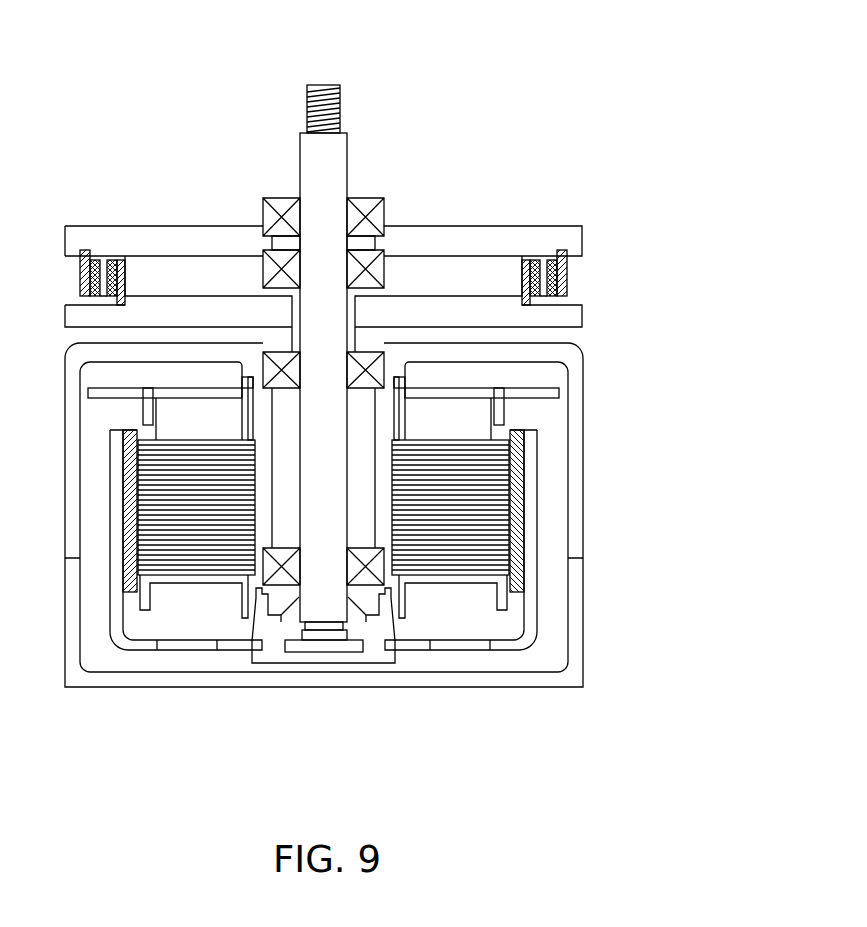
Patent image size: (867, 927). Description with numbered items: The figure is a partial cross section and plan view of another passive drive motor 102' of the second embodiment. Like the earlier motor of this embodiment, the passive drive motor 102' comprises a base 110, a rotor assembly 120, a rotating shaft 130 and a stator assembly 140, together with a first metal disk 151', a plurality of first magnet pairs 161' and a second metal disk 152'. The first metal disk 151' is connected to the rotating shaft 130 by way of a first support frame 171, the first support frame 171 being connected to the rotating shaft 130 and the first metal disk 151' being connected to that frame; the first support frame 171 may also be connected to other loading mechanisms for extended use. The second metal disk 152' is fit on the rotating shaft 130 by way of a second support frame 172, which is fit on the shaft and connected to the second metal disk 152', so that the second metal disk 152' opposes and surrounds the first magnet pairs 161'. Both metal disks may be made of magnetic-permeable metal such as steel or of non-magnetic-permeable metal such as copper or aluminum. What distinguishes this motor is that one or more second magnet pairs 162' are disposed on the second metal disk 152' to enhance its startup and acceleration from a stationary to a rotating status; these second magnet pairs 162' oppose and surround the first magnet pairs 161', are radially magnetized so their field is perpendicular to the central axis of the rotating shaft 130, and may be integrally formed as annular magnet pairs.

The passive drive motor 102' is at (304, 354).
The base 110 is at (312, 663).
The rotor assembly 120 is at (128, 652).
The rotating shaft 130 is at (340, 608).
The stator assembly 140 is at (453, 578).
The first metal disk 151' is at (386, 293).
The second metal disk 152' is at (368, 273).
The first magnet pairs 161' is at (378, 280).
The second magnet pairs 162' is at (333, 236).
The first support frame 171 is at (578, 313).
The second support frame 172 is at (575, 240).